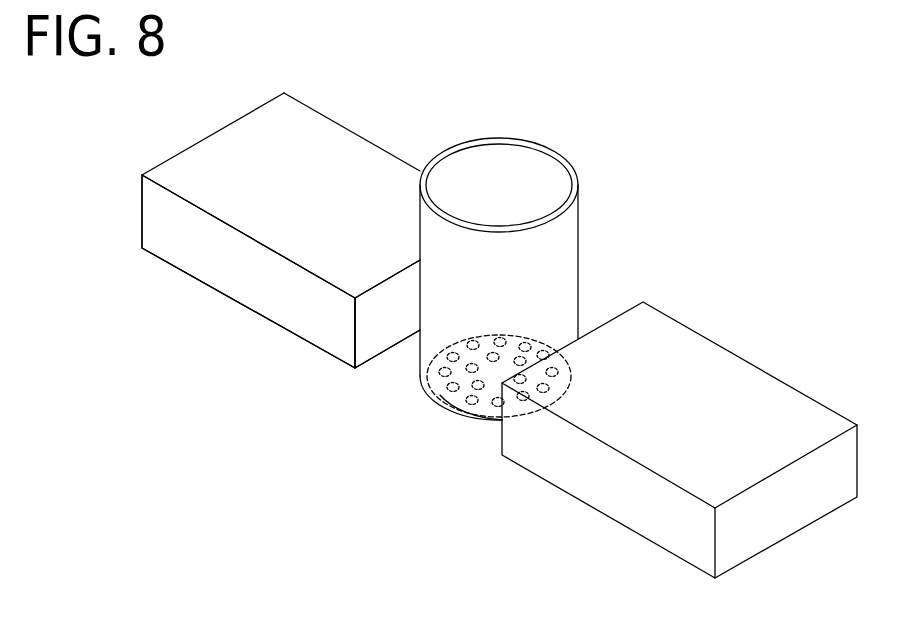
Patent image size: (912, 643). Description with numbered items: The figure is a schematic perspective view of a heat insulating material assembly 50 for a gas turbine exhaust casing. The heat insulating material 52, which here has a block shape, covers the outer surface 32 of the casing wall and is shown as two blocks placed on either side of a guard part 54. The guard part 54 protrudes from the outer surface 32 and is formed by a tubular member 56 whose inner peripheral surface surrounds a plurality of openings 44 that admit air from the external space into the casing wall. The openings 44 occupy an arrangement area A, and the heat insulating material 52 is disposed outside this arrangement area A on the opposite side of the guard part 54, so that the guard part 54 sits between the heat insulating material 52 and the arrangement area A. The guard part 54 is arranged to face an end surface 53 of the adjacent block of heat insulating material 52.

The outer surface 32 is at (255, 370).
The openings 44 is at (435, 390).
The heat insulating material assembly 50 is at (707, 142).
The heat insulating material 52 is at (353, 163).
The end surface 53 is at (367, 352).
The guard part 54 is at (587, 168).
The tubular member 56 is at (567, 242).
The arrangement area A is at (477, 415).